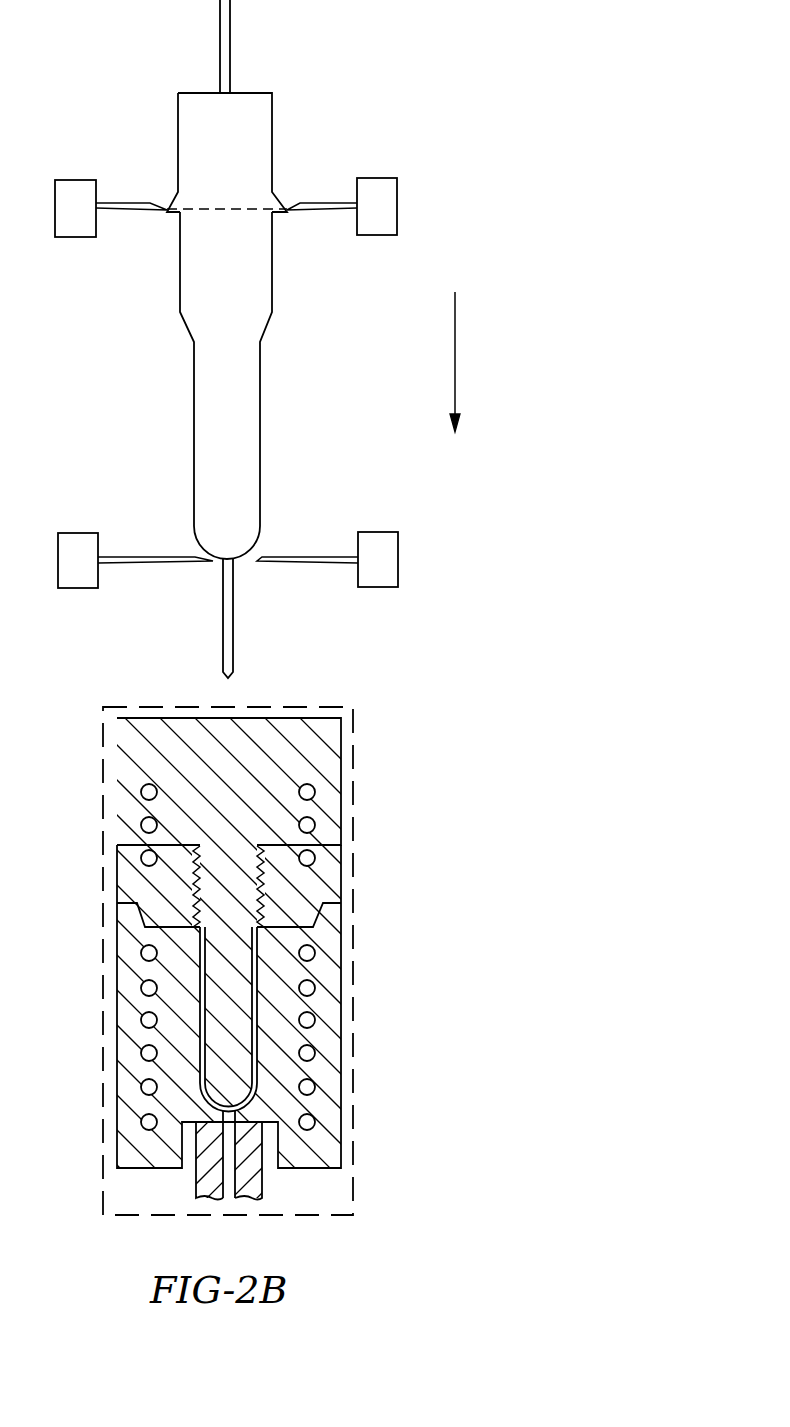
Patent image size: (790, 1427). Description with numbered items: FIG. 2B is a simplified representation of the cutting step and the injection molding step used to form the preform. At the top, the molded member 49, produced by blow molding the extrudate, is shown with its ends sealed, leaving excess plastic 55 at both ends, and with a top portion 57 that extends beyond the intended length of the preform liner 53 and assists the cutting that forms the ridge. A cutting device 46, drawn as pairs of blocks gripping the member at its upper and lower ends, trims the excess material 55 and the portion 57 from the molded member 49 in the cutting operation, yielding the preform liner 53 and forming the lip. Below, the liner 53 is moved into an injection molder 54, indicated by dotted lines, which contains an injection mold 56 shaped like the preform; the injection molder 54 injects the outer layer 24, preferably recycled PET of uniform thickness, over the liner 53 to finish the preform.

The outer layer 24 is at (257, 1045).
The cutting device 46 is at (393, 188).
The molded member 49 is at (237, 339).
The preform liner 53 is at (260, 438).
The injection molder 54 is at (355, 852).
The excess plastic 55 is at (225, 31).
The injection mold 56 is at (310, 752).
The portion 57 is at (190, 152).